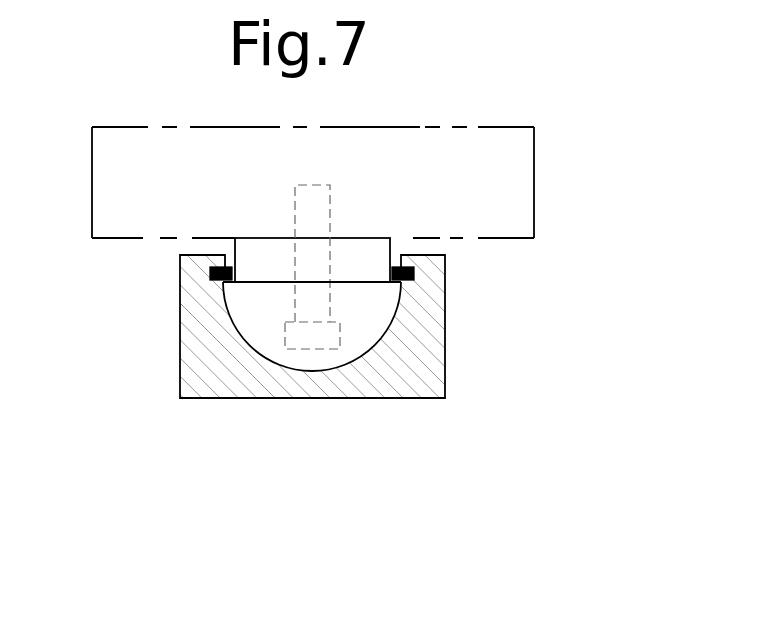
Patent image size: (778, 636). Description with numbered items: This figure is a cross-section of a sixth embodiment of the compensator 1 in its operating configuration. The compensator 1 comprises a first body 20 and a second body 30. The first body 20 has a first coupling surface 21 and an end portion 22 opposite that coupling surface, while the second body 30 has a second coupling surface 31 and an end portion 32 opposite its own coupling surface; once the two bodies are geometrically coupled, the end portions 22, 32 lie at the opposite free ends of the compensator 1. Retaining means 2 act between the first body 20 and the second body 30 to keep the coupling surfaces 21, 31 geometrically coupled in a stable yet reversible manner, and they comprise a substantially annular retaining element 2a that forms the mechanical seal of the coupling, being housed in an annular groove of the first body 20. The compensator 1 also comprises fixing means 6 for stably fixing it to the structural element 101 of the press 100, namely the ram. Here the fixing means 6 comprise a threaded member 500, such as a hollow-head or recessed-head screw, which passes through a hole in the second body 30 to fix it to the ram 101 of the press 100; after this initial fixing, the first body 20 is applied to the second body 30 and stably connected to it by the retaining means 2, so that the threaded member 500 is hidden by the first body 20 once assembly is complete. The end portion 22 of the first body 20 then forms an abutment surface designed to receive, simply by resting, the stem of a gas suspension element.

The compensator 1 is at (566, 364).
The retaining means 2 is at (190, 288).
The retaining element 2a is at (210, 272).
The fixing means 6 is at (278, 304).
The first body 20 is at (440, 425).
The first coupling surface 21 is at (370, 346).
The end portion 22 is at (377, 398).
The second body 30 is at (250, 215).
The second coupling surface 31 is at (377, 285).
The end portion 32 is at (357, 238).
The press 100 is at (554, 140).
The structural element 101 is at (518, 239).
The threaded member 500 is at (315, 372).